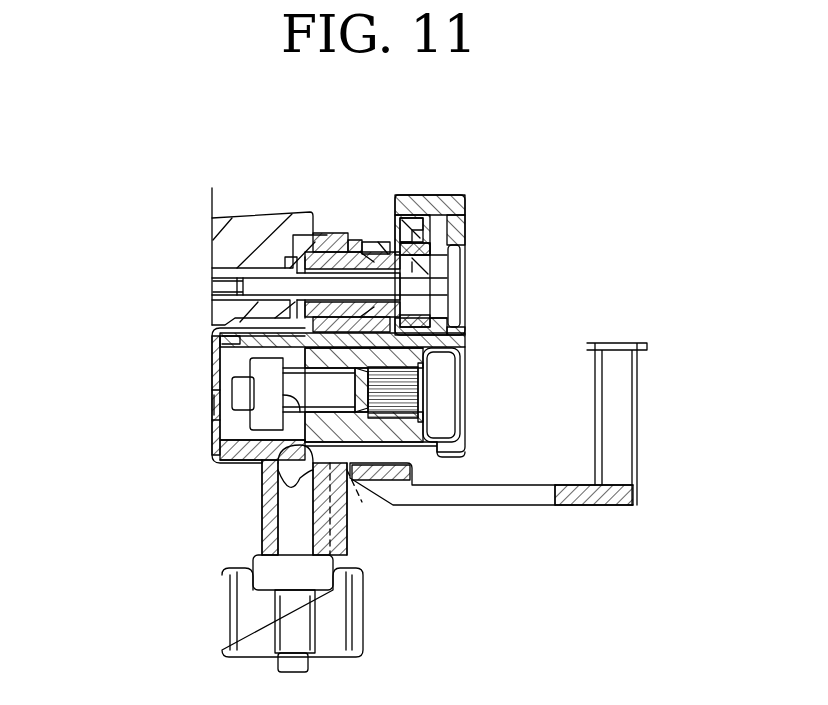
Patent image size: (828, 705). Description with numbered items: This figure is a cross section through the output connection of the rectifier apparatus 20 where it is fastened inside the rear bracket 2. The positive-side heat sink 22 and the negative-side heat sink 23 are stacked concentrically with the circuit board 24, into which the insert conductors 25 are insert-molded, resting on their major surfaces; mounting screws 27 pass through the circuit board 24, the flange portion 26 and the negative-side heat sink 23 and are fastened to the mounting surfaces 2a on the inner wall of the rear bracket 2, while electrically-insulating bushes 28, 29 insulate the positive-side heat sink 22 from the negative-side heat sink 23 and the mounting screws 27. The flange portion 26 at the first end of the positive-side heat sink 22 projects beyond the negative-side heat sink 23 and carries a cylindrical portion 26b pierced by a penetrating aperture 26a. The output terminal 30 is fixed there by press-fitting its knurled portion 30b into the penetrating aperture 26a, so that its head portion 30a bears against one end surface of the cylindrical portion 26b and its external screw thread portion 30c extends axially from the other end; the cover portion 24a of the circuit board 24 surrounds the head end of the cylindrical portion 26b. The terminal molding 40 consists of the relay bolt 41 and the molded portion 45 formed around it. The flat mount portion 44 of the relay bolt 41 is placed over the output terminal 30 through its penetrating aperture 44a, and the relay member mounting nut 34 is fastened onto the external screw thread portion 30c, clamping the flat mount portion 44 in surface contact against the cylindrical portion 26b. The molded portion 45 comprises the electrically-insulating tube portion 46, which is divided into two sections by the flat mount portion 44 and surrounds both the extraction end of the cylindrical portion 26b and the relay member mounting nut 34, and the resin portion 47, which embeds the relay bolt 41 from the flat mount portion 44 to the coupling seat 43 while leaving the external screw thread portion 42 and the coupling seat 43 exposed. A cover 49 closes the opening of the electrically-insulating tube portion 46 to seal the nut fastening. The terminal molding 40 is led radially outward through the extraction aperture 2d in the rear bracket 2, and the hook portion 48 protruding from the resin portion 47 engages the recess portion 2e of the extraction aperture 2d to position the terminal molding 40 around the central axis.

The rear bracket 2 is at (583, 508).
The mounting surfaces 2a is at (335, 212).
The extraction aperture 2d is at (365, 535).
The recess portion 2e is at (365, 500).
The rectifier apparatus 20 is at (478, 186).
The positive-side heat sink 22 is at (380, 242).
The negative-side heat sink 23 is at (333, 232).
The circuit board 24 is at (450, 192).
The cover portion 24a is at (455, 455).
The insert conductors 25 is at (418, 216).
The flange portion 26 is at (415, 350).
The penetrating aperture 26a is at (392, 450).
The cylindrical portion 26b is at (445, 465).
The mounting screws 27 is at (442, 278).
The electrically-insulating bush 28 is at (355, 238).
The electrically-insulating bush 29 is at (435, 252).
The output terminal 30 is at (450, 408).
The head portion 30a is at (445, 370).
The knurled portion 30b is at (448, 386).
The external screw thread portion 30c is at (238, 392).
The relay member mounting nut 34 is at (262, 366).
The terminal molding 40 is at (375, 650).
The relay bolt 41 is at (266, 633).
The external screw thread portion 42 is at (268, 620).
The coupling seat 43 is at (270, 573).
The flat mount portion 44 is at (246, 466).
The penetrating aperture 44a is at (292, 418).
The molded portion 45 is at (362, 605).
The electrically-insulating tube portion 46 is at (245, 343).
The resin portion 47 is at (270, 500).
The hook portion 48 is at (350, 540).
The cover 49 is at (216, 413).